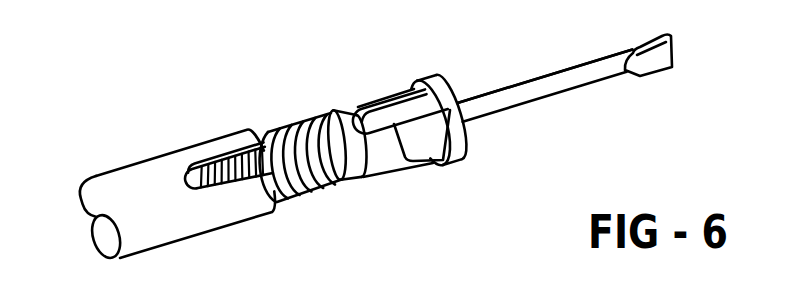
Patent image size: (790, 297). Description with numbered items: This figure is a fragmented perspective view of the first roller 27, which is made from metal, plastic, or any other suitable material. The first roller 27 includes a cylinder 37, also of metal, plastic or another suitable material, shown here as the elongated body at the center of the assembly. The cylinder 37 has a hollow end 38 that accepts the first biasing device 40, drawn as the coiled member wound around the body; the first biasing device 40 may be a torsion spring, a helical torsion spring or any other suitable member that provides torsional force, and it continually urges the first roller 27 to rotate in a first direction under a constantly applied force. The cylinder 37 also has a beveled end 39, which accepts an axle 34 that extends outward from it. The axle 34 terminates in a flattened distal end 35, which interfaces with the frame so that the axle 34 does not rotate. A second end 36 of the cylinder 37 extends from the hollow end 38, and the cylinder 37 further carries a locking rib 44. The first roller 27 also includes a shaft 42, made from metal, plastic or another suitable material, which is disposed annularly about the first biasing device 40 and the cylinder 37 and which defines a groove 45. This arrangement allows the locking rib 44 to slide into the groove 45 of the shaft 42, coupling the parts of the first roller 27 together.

The first roller 27 is at (121, 133).
The axle 34 is at (518, 100).
The flattened distal end 35 is at (668, 56).
The second end 36 is at (544, 76).
The cylinder 37 is at (377, 177).
The hollow end 38 is at (334, 112).
The beveled end 39 is at (438, 80).
The first biasing device 40 is at (290, 123).
The shaft 42 is at (207, 150).
The locking rib 44 is at (409, 161).
The groove 45 is at (240, 183).